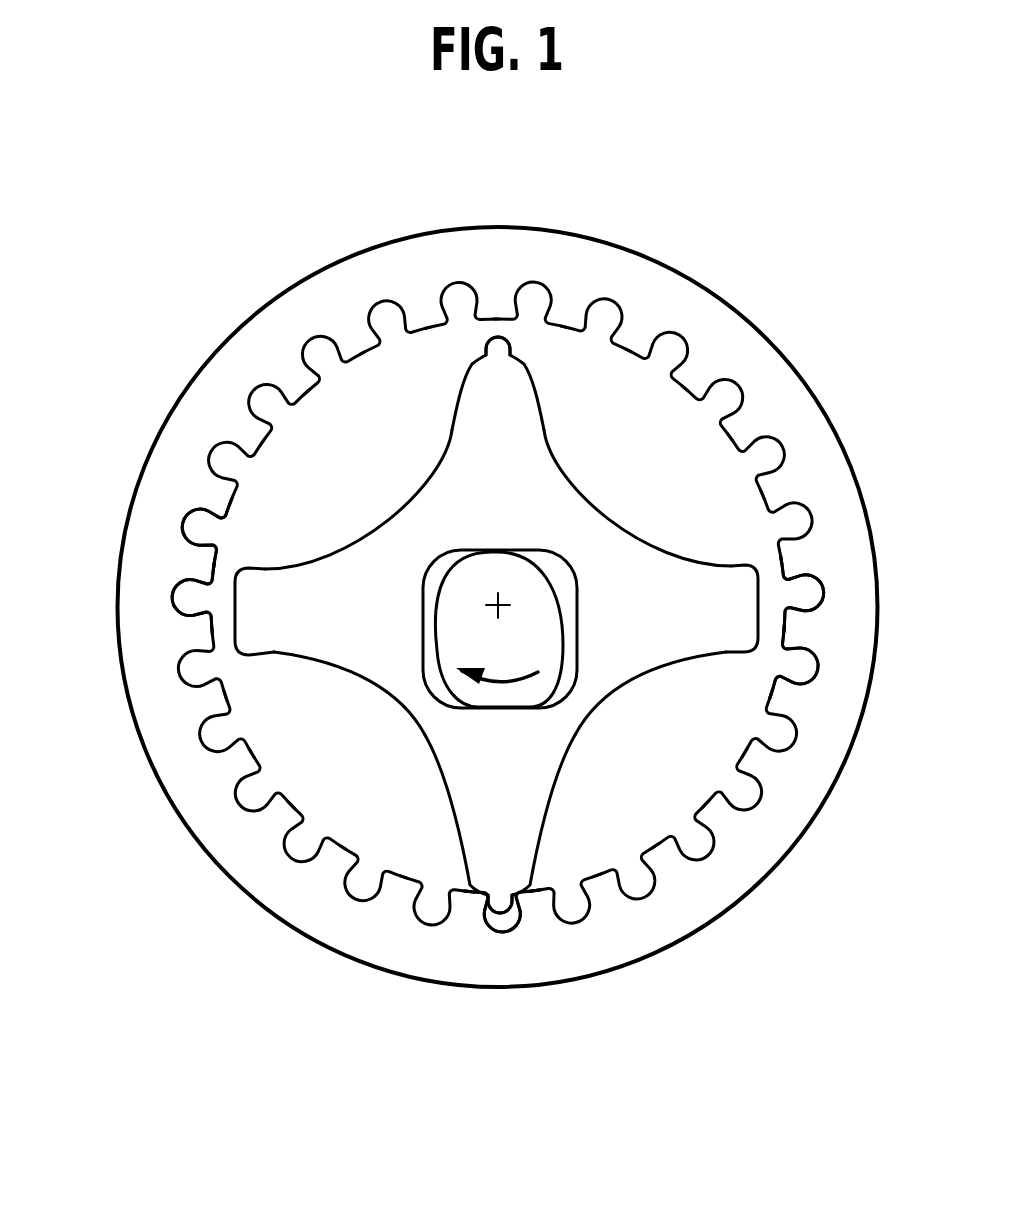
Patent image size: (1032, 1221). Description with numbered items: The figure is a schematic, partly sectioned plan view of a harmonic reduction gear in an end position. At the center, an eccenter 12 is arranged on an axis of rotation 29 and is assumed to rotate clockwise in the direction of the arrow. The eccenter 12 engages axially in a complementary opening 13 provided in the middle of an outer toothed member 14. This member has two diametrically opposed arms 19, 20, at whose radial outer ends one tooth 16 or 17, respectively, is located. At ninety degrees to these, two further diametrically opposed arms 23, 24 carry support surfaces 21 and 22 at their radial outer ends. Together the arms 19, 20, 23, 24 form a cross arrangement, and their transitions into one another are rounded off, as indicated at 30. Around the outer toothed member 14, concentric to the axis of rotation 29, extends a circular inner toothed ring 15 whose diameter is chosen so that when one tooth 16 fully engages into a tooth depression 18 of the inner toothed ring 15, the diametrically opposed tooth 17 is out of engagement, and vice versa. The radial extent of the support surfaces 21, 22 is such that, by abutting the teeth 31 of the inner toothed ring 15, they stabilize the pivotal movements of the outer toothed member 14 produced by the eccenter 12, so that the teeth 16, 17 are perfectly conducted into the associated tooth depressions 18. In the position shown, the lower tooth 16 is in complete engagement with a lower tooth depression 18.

The eccenter 12 is at (452, 617).
The opening 13 is at (577, 621).
The outer toothed member 14 is at (496, 604).
The inner toothed ring 15 is at (655, 318).
The tooth 16 is at (498, 903).
The tooth 17 is at (490, 350).
The tooth depression 18 is at (507, 923).
The arm 19 is at (516, 835).
The arm 20 is at (515, 397).
The support surface 21 is at (233, 603).
The support surface 22 is at (760, 594).
The arm 23 is at (276, 624).
The arm 24 is at (717, 630).
The axis of rotation 29 is at (505, 597).
The rounded transition 30 is at (415, 498).
The teeth 31 is at (200, 562).